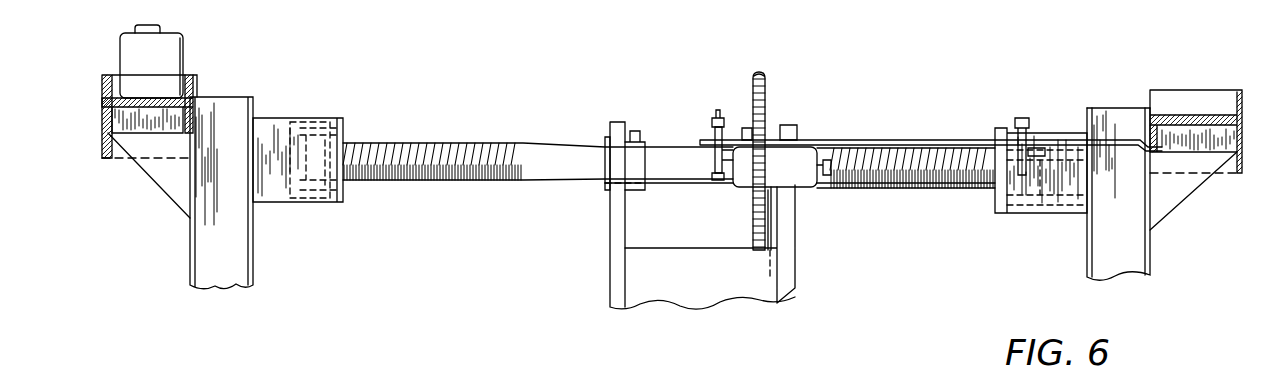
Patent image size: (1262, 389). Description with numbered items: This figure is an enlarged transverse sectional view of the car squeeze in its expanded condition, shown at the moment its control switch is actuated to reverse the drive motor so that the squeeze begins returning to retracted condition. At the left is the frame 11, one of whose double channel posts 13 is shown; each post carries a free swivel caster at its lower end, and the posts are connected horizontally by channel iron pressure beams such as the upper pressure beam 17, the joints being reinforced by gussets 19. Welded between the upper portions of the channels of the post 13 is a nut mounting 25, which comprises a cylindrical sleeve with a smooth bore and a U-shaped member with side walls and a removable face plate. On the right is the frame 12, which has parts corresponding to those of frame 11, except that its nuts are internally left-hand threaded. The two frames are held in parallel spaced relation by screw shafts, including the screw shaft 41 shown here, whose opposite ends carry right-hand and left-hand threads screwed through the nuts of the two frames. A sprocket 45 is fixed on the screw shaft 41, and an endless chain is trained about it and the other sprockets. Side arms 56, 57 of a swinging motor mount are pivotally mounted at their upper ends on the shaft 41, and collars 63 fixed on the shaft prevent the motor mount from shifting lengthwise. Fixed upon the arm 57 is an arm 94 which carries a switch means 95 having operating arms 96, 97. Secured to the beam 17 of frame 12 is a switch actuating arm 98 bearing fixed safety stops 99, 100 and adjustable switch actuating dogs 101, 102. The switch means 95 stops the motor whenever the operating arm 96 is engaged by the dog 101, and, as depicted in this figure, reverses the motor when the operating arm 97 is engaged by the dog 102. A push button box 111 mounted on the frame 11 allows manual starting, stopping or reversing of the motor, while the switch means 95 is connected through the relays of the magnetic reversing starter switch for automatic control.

The frame 11 is at (277, 113).
The frame 12 is at (106, 75).
The double channel post 13 is at (226, 97).
The upper channel iron pressure beam 17 is at (172, 100).
The gusset 19 is at (163, 196).
The nut mounting 25 is at (294, 118).
The screw shaft 41 is at (546, 145).
The sprocket 45 is at (774, 92).
The side arm 56 is at (610, 216).
The side arm 57 is at (790, 256).
The collar 63 is at (650, 140).
The arm 94 is at (776, 216).
The switch means 95 is at (801, 150).
The operating arm 96 is at (833, 167).
The operating arm 97 is at (722, 180).
The switch actuating arm 98 is at (1057, 143).
The fixed safety stop 99 is at (1044, 157).
The fixed safety stop 100 is at (710, 128).
The adjustable switch actuating dog 101 is at (1022, 187).
The adjustable switch actuating dog 102 is at (713, 152).
The push button box 111 is at (180, 36).